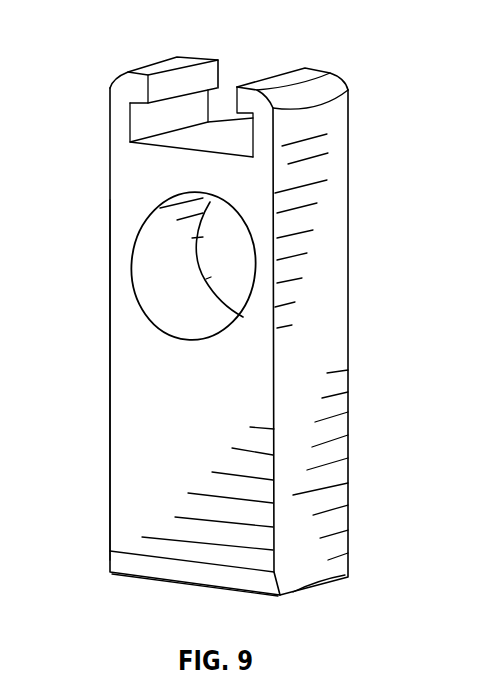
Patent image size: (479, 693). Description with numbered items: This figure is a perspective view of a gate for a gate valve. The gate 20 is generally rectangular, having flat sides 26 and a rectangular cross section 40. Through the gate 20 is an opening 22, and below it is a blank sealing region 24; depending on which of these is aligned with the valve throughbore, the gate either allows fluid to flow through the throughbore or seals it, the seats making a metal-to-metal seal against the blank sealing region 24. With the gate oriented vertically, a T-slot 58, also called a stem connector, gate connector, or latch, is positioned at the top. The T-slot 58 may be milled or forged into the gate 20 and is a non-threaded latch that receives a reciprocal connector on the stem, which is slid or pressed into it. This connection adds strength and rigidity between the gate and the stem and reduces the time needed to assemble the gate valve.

The gate 20 is at (230, 327).
The opening 22 is at (137, 264).
The blank sealing region 24 is at (132, 408).
The flat sides 26 is at (233, 470).
The rectangular cross section 40 is at (180, 570).
The T-slot 58 is at (208, 133).